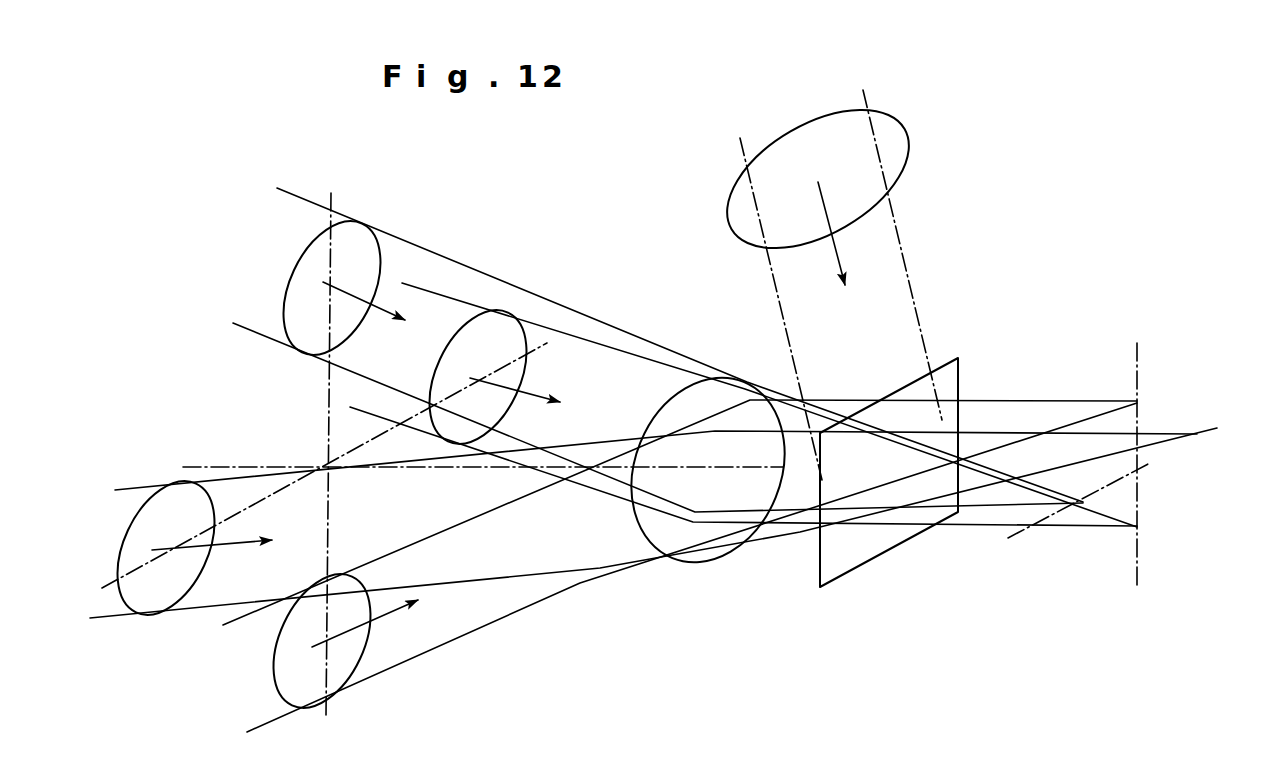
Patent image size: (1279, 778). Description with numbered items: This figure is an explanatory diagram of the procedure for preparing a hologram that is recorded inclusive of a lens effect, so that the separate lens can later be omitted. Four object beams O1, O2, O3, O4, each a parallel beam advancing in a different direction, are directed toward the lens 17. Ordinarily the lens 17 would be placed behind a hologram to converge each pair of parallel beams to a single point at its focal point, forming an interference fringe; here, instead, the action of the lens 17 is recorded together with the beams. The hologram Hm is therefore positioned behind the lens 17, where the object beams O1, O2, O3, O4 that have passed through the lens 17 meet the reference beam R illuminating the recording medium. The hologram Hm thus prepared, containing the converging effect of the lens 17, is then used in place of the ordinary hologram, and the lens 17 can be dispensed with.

The object beam O1 is at (319, 244).
The object beam O2 is at (278, 658).
The object beam O3 is at (442, 353).
The object beam O4 is at (200, 572).
The lens 17 is at (696, 399).
The reference beam R is at (900, 168).
The hologram Hm is at (897, 553).